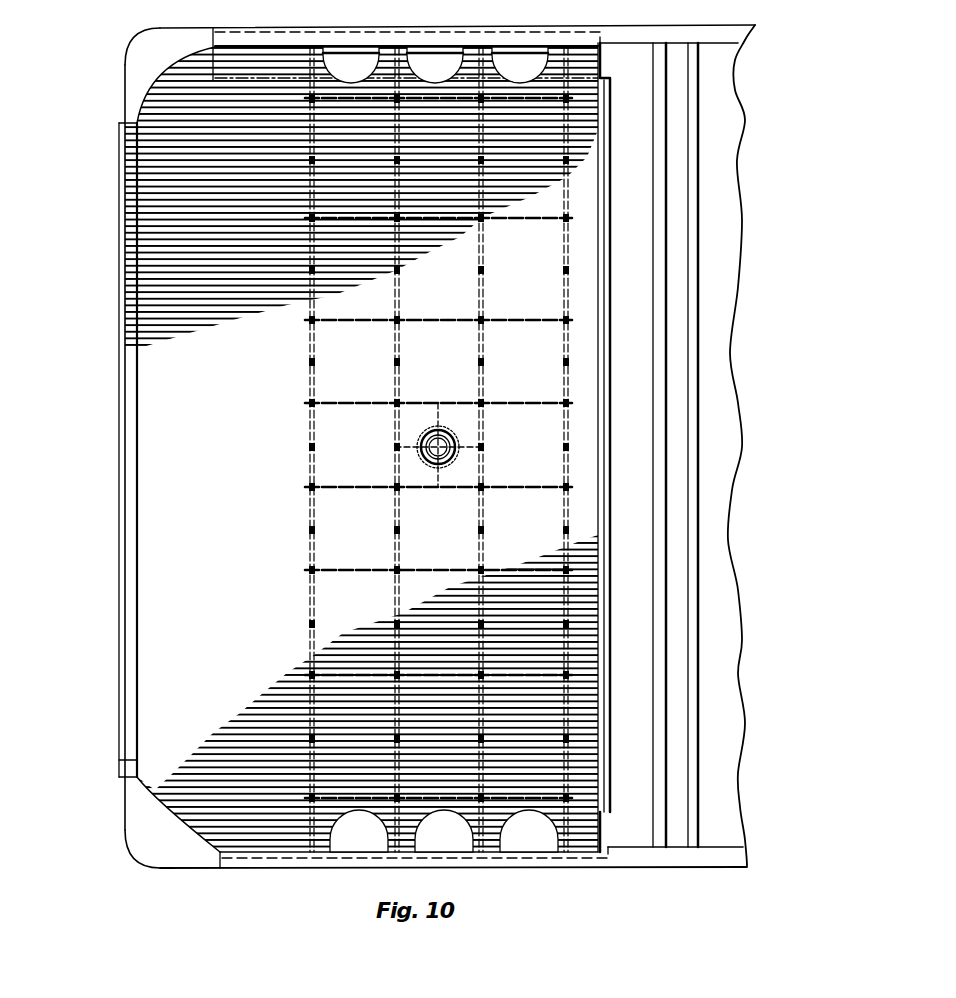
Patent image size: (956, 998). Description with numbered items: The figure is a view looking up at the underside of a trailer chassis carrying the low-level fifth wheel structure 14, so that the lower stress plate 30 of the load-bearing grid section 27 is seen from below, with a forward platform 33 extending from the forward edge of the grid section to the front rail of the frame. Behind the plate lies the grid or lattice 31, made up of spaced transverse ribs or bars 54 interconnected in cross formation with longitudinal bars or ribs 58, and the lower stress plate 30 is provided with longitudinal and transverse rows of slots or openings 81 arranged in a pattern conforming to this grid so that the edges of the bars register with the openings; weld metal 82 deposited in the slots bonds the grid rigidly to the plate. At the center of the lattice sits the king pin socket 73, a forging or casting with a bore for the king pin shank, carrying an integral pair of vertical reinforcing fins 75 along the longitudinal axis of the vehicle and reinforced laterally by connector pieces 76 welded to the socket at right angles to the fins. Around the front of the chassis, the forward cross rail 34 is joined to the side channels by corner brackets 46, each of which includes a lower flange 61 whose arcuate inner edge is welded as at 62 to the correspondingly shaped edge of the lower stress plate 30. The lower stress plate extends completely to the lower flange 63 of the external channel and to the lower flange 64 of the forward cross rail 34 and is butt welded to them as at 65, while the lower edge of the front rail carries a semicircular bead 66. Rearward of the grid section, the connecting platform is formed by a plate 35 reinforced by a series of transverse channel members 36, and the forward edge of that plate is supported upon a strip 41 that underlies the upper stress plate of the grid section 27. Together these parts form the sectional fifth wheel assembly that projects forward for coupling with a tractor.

The fifth wheel structure 14 is at (106, 293).
The load-bearing grid section 27 is at (560, 820).
The lower stress plate 30 is at (548, 256).
The grid or lattice 31 is at (484, 300).
The slat panel 33 is at (176, 396).
The forward cross rail 34 is at (118, 625).
The plate 35 is at (724, 673).
The transverse channel members 36 is at (690, 626).
The strip 41 is at (607, 642).
The corner brackets 46 is at (132, 56).
The transverse ribs or bars 54 is at (486, 509).
The longitudinal bars or ribs 58 is at (343, 568).
The lower flange 61 is at (185, 45).
The weld 62 is at (178, 90).
The lower flange of external channel 63 is at (398, 34).
The lower flange of forward cross rail 64 is at (130, 665).
The butt weld 65 is at (150, 478).
The semicircular bead 66 is at (116, 710).
The king pin socket 73 is at (448, 430).
The vertical reinforcing fins 75 is at (466, 455).
The connector pieces 76 is at (432, 428).
The slots or openings 81 is at (528, 403).
The weld metal 82 is at (440, 568).